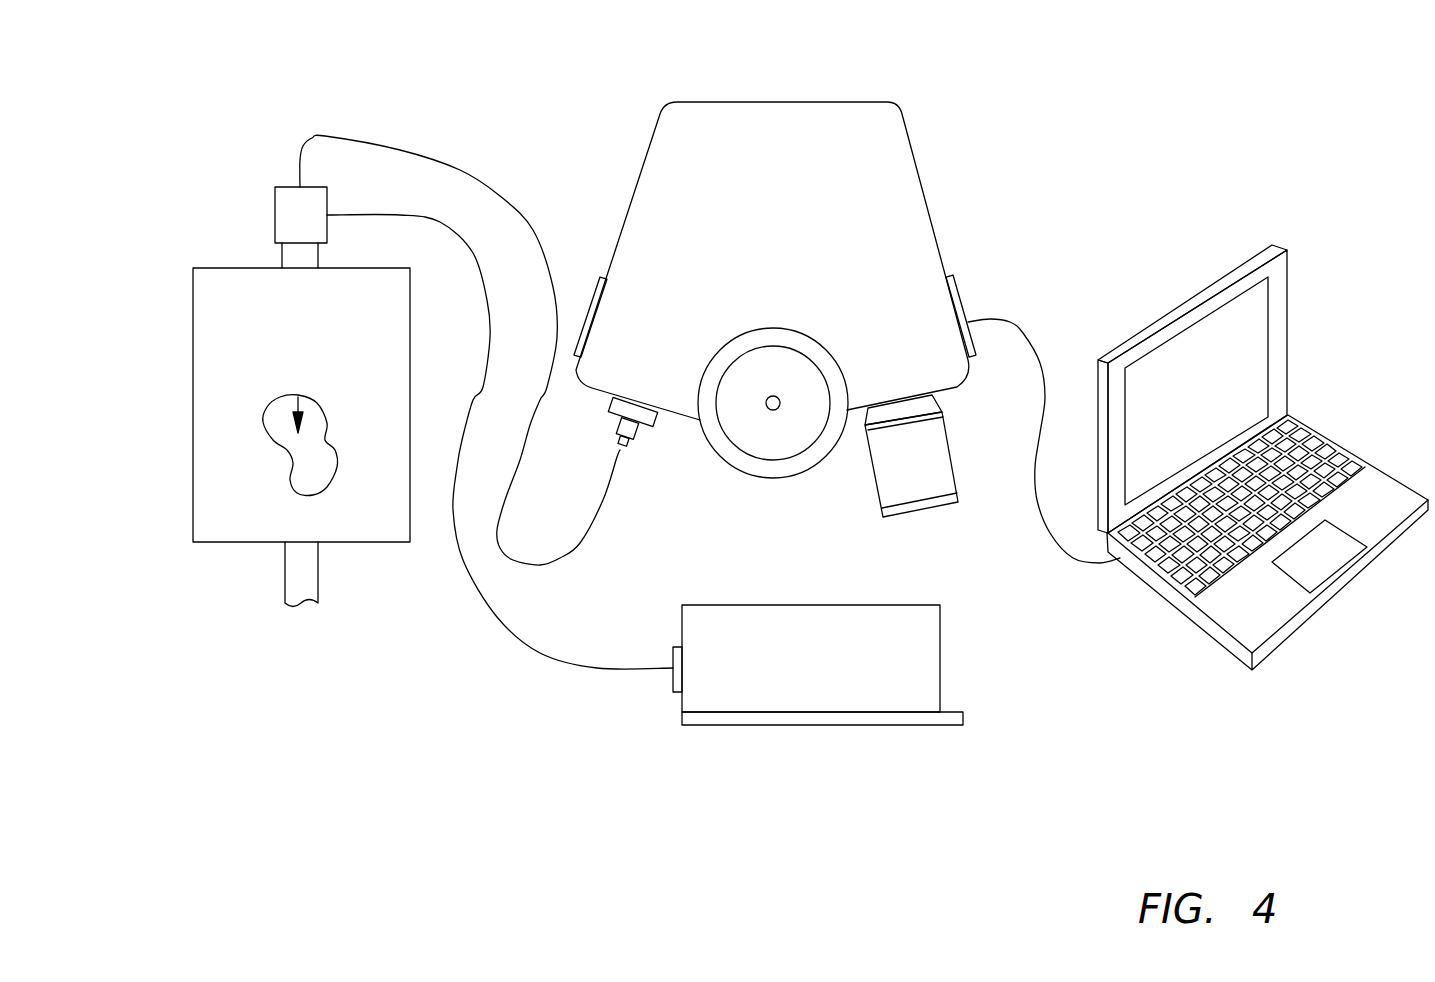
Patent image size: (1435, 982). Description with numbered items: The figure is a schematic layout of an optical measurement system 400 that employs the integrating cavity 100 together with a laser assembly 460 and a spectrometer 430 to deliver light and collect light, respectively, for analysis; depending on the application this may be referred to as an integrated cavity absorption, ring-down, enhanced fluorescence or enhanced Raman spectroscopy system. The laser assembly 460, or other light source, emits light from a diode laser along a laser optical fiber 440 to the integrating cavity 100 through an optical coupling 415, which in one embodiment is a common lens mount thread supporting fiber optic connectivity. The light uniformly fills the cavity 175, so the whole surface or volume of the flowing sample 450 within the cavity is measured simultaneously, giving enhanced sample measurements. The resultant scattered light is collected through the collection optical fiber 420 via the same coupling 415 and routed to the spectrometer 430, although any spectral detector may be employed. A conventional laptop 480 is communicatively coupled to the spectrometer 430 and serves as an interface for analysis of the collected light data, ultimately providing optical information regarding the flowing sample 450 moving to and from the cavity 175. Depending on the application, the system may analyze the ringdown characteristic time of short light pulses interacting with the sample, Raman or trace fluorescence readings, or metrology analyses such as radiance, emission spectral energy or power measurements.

The optical measurement system 400 is at (1052, 45).
The integrating cavity 100 is at (172, 176).
The cavity 175 is at (278, 430).
The optical coupling 415 is at (262, 210).
The collection optical fiber 420 is at (503, 195).
The spectrometer 430 is at (797, 194).
The laser optical fiber 440 is at (475, 272).
The flowing sample 450 is at (304, 407).
The laser assembly 460 is at (757, 767).
The laptop 480 is at (1130, 278).